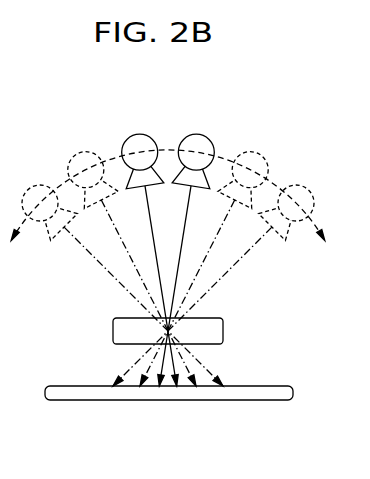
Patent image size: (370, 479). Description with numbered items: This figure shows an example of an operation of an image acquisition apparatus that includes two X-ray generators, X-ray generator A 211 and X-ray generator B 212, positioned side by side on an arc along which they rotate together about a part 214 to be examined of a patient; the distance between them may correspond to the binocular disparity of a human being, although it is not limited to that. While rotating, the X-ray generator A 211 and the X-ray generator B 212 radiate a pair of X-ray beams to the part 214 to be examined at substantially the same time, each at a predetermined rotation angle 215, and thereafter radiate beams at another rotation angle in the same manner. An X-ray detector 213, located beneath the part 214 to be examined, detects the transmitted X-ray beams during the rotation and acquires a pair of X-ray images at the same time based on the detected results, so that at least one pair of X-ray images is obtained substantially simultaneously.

The X-ray generator A 211 is at (126, 140).
The X-ray generator B 212 is at (210, 141).
The X-ray detector 213 is at (227, 400).
The part to be examined 214 is at (223, 333).
The predetermined rotation angle 215 is at (180, 242).